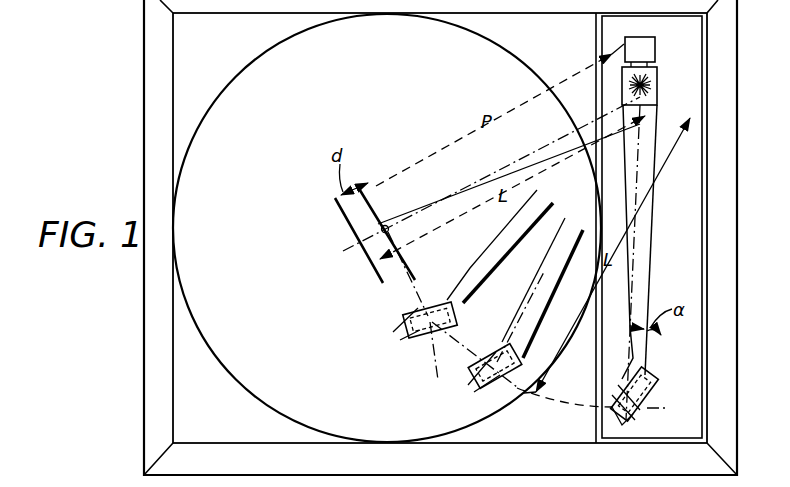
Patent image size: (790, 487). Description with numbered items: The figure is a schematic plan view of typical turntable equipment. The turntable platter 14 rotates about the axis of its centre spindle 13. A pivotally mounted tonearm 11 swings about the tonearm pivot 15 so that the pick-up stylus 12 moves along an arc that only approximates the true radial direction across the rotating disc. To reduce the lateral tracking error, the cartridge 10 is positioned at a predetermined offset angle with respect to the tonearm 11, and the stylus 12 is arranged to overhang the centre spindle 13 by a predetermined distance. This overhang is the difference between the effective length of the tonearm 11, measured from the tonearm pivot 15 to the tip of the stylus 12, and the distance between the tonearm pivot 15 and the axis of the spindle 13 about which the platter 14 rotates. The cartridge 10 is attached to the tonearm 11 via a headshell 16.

The cartridge 10 is at (635, 414).
The tonearm 11 is at (644, 294).
The stylus 12 is at (403, 320).
The centre spindle 13 is at (380, 231).
The turntable platter 14 is at (253, 205).
The tonearm pivot 15 is at (655, 78).
The headshell 16 is at (657, 384).